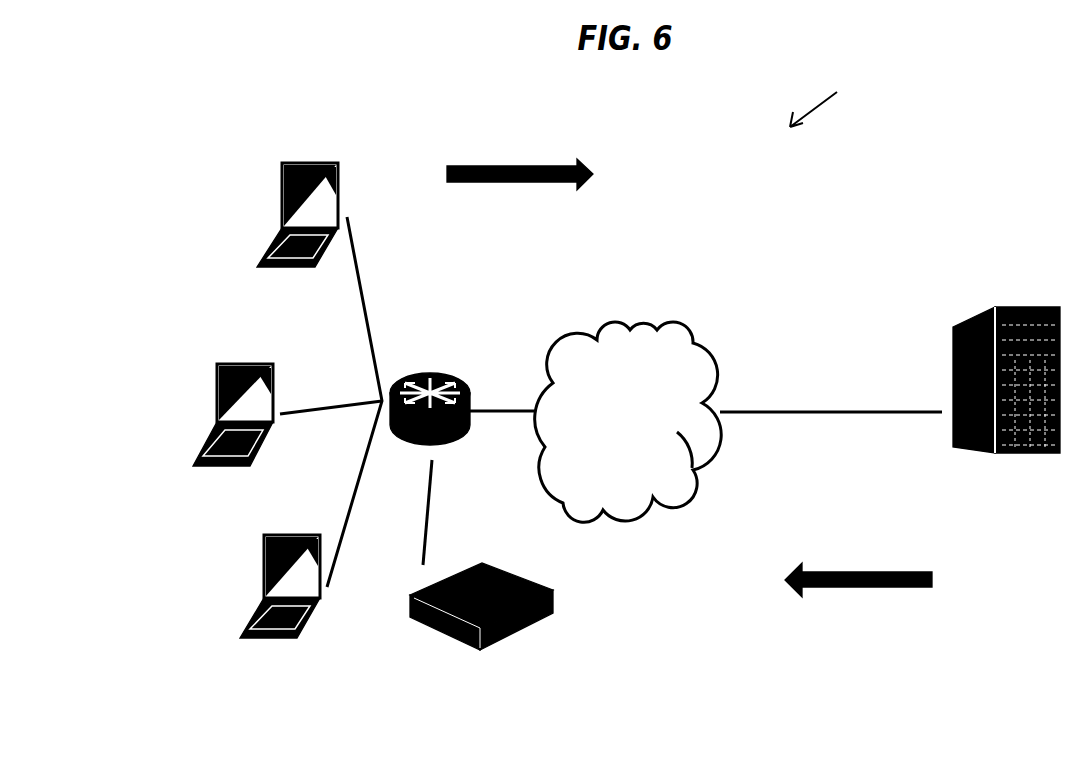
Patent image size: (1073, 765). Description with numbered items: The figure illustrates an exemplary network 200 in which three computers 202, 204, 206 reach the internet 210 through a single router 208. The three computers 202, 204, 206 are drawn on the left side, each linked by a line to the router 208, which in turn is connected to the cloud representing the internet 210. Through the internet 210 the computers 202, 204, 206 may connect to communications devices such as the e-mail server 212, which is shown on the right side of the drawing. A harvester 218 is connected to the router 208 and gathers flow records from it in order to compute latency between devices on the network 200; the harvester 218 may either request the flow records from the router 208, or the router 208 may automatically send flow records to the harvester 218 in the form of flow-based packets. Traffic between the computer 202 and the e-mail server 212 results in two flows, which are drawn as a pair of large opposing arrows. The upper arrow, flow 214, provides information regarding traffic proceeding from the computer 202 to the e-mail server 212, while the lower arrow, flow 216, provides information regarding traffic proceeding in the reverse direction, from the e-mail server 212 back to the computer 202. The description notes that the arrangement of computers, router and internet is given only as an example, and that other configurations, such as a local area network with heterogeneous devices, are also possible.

The network 200 is at (848, 83).
The computer 202 is at (287, 180).
The computer 204 is at (218, 400).
The computer 206 is at (272, 567).
The router 208 is at (437, 377).
The internet 210 is at (658, 515).
The e-mail server 212 is at (953, 335).
The flow 214 is at (533, 167).
The flow 216 is at (858, 589).
The harvester 218 is at (440, 618).